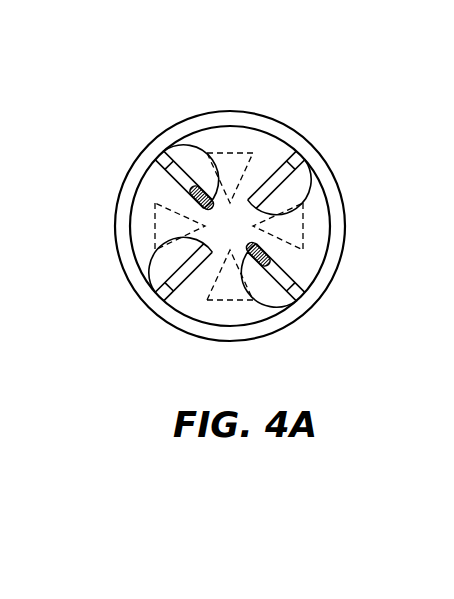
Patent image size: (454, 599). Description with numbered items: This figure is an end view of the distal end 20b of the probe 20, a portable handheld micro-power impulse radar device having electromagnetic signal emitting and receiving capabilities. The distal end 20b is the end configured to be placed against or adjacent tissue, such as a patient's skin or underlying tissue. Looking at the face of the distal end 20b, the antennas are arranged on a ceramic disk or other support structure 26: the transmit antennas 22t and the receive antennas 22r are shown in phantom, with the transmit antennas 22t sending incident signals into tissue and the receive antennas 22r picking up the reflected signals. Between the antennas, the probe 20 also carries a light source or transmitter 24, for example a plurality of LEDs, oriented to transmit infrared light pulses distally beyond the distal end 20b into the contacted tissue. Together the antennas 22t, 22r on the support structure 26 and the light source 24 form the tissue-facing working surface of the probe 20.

The probe 20 is at (341, 121).
The distal end 20b is at (341, 197).
The transmit antennas 22t is at (222, 160).
The receive antennas 22r is at (155, 216).
The light source or transmitter 24 is at (192, 190).
The ceramic disk or support structure 26 is at (304, 257).